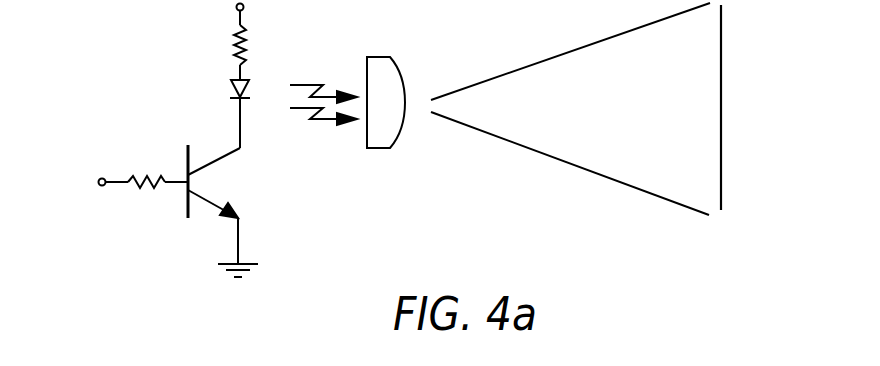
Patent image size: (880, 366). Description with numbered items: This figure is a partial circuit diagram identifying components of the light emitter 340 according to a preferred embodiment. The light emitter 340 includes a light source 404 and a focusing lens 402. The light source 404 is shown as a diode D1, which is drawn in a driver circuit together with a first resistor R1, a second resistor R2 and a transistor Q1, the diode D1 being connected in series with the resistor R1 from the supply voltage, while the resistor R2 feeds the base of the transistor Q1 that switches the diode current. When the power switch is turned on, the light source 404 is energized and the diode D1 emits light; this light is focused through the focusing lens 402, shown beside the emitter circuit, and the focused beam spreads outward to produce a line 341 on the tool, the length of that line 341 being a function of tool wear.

The light source 404 is at (210, 138).
The resistor R1 is at (258, 45).
The diode D1 is at (230, 87).
The resistor R2 is at (144, 164).
The transistor Q1 is at (210, 200).
The focusing lens 402 is at (397, 137).
The light emitter 340 is at (430, 46).
The line 341 is at (721, 127).